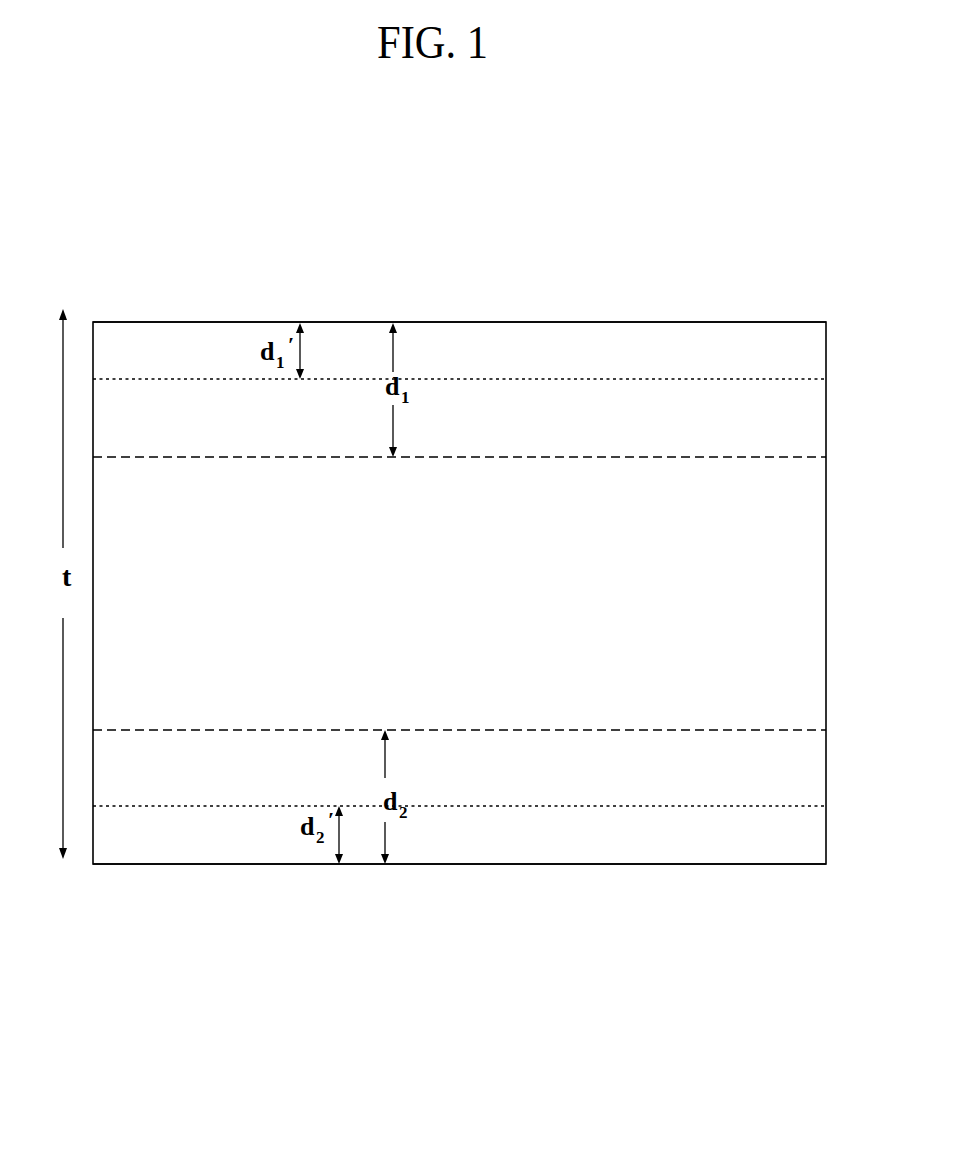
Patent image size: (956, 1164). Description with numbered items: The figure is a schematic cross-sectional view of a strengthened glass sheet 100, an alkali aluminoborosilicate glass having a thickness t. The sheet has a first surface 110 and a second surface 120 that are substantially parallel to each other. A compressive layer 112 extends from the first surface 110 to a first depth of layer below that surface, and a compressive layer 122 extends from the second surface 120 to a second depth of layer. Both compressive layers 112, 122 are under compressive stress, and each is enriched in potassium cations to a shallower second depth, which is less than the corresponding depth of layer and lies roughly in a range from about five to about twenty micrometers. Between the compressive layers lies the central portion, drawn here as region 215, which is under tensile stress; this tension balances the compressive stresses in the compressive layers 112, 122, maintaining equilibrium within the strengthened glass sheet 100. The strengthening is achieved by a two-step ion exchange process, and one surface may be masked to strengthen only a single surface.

The strengthened glass sheet 100 is at (442, 182).
The first surface 110 is at (178, 317).
The second surface 120 is at (266, 872).
The compressive layer 112 is at (459, 389).
The compressive layer 122 is at (459, 797).
The central tension region 215 is at (459, 593).